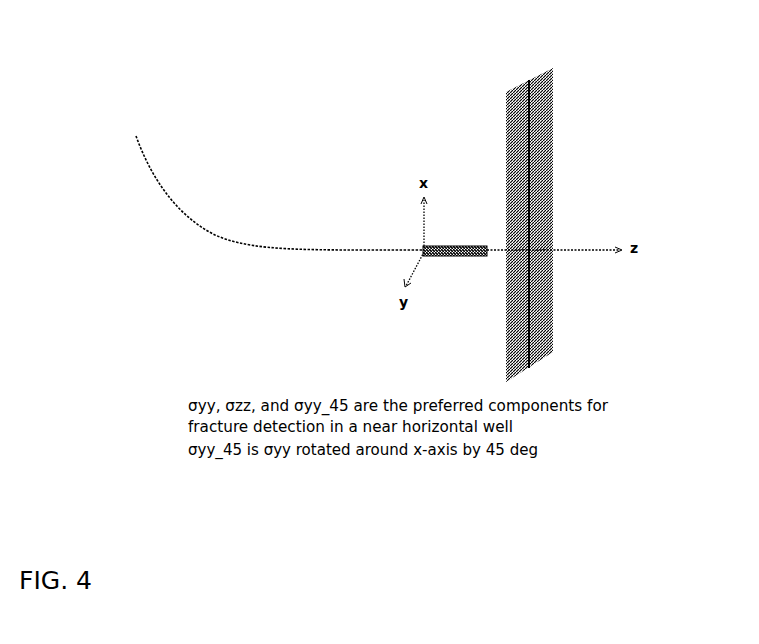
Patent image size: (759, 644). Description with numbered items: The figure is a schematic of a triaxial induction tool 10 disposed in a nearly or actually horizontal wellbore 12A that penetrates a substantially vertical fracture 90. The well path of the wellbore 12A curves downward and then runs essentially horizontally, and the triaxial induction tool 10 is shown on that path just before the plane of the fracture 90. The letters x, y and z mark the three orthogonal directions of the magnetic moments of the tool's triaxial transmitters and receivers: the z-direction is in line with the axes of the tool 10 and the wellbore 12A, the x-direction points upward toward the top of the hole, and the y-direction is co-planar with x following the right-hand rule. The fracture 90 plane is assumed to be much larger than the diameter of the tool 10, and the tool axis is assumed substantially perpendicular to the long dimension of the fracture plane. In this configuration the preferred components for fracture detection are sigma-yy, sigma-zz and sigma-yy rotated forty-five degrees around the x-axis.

The triaxial induction tool 10 is at (432, 257).
The horizontal wellbore 12A is at (357, 250).
The vertical fracture 90 is at (548, 150).